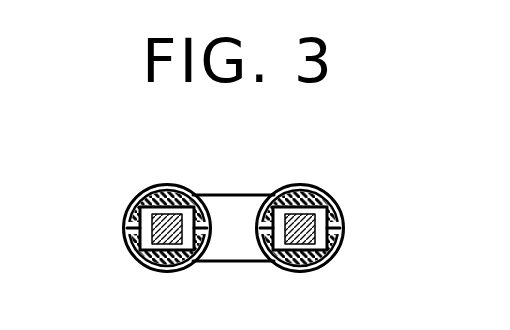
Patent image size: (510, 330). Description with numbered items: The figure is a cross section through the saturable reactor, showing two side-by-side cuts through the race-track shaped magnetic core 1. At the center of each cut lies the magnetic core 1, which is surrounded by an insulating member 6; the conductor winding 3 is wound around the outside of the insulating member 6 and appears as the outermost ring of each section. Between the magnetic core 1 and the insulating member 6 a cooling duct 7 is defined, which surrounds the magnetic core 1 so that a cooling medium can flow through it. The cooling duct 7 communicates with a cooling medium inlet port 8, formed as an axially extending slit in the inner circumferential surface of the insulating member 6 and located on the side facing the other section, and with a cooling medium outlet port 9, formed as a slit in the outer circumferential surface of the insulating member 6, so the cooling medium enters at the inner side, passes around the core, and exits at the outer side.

The magnetic core 1 is at (156, 271).
The conductor winding 3 is at (168, 185).
The insulating member 6 is at (304, 272).
The cooling duct 7 is at (180, 270).
The cooling medium inlet port 8 is at (257, 233).
The cooling medium outlet port 9 is at (125, 230).